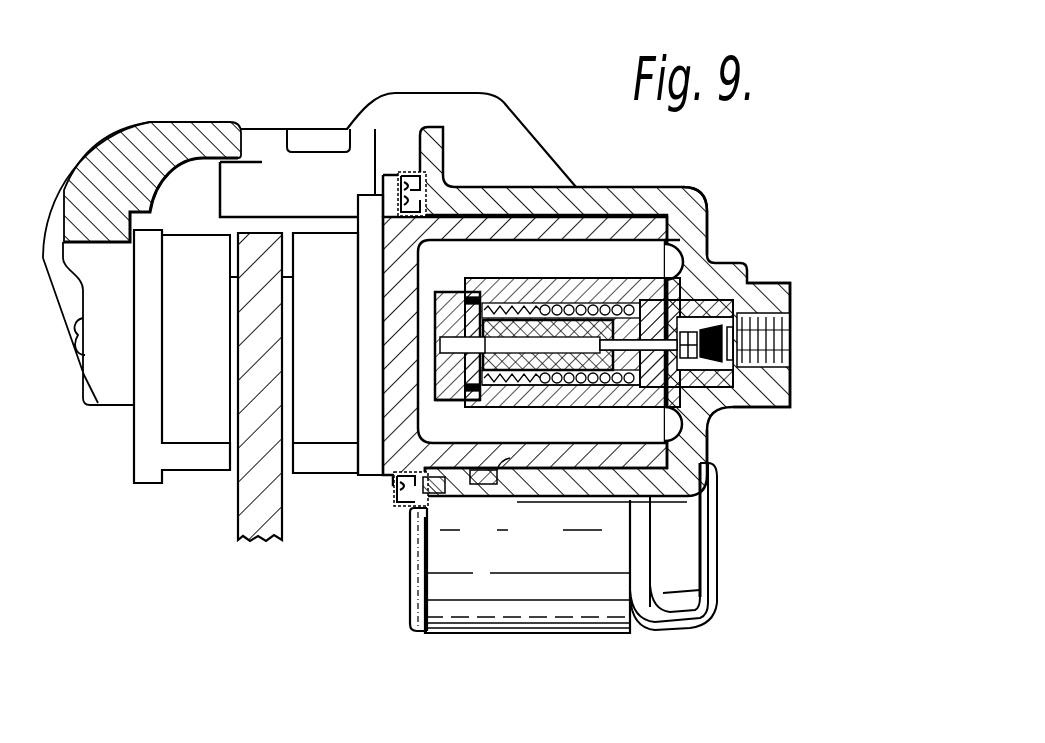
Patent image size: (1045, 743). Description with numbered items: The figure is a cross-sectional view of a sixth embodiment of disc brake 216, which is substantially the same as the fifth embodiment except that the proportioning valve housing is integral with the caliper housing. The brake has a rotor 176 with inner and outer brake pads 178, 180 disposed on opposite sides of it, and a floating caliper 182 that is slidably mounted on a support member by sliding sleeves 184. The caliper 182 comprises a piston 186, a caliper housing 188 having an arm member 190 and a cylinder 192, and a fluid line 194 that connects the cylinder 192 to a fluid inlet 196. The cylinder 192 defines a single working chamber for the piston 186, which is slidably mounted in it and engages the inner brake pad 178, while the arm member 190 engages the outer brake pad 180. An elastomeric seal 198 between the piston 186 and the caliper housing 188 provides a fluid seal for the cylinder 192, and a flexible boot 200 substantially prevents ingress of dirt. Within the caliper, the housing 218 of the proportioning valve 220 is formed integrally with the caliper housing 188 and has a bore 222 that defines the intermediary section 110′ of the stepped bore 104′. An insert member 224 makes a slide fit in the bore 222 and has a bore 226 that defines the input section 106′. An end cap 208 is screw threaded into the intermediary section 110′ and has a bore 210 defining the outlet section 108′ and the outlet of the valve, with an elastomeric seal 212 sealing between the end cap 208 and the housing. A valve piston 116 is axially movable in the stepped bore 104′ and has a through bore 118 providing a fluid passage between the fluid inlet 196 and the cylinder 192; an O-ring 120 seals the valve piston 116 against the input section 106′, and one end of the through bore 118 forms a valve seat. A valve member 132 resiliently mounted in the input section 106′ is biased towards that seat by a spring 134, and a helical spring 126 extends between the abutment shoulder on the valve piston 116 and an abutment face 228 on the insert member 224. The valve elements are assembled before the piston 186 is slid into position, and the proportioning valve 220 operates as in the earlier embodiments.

The arm member 190 is at (147, 137).
The disc brake 216 is at (531, 102).
The caliper 182 is at (597, 210).
The cylinder 192 is at (666, 220).
The bore 226 is at (698, 278).
The insert member 224 is at (710, 290).
The caliper housing 188 is at (773, 282).
The fluid inlet 196 is at (792, 342).
The fluid line 194 is at (745, 350).
The valve member 132 is at (718, 396).
The spring 134 is at (773, 408).
The input section 106′ is at (707, 464).
The sliding sleeves 184 is at (690, 558).
The outlet section 108′ is at (482, 292).
The stepped bore 104′ is at (533, 292).
The intermediary section 110′ is at (578, 304).
The abutment face 228 is at (655, 294).
The through bore 118 is at (440, 329).
The bore 210 is at (440, 352).
The end cap 208 is at (436, 399).
The elastomeric seal 212 is at (473, 401).
The proportioning valve 220 is at (546, 388).
The bore 222 is at (600, 396).
The O-ring 120 is at (644, 400).
The outer brake pad 180 is at (199, 458).
The inner brake pad 178 is at (320, 465).
The rotor 176 is at (252, 524).
The flexible boot 200 is at (408, 507).
The elastomeric seal 198 is at (474, 500).
The valve piston 116 is at (490, 504).
The piston 186 is at (570, 470).
The helical spring 126 is at (540, 470).
The housing 218 is at (603, 465).